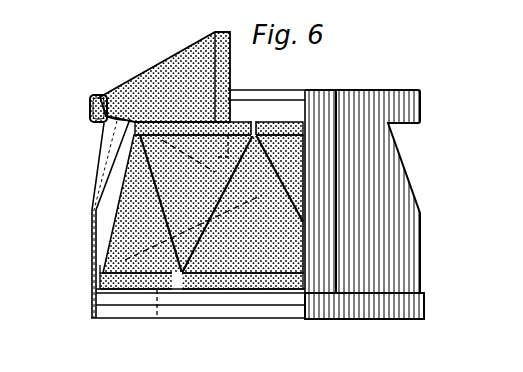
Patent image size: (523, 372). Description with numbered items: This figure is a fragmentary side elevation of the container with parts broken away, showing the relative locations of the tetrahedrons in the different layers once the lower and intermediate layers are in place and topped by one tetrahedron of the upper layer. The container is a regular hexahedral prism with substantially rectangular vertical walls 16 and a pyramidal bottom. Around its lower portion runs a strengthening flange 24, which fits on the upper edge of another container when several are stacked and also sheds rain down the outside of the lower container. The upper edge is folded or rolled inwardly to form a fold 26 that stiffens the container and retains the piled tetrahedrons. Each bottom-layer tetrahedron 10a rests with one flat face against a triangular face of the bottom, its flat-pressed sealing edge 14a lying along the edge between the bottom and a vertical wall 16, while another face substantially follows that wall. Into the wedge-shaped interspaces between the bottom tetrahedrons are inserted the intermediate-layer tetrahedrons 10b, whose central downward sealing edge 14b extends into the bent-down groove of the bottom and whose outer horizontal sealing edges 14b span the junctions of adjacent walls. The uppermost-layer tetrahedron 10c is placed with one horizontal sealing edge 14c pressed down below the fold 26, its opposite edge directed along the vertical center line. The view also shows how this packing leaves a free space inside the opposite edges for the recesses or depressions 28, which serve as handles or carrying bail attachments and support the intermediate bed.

The tetrahedron of the bottom layer 10a is at (110, 244).
The tetrahedron of the intermediate layer 10b is at (245, 121).
The tetrahedron of the uppermost layer 10c is at (197, 52).
The sealing edge of bottom-layer tetrahedron 14a is at (97, 283).
The sealing edge of intermediate-layer tetrahedron 14b is at (180, 275).
The sealing edge of uppermost-layer tetrahedron 14c is at (90, 112).
The vertical wall 16 is at (398, 255).
The strengthening flange 24 is at (423, 307).
The upper edge fold 26 is at (101, 94).
The recess or depression 28 is at (108, 118).